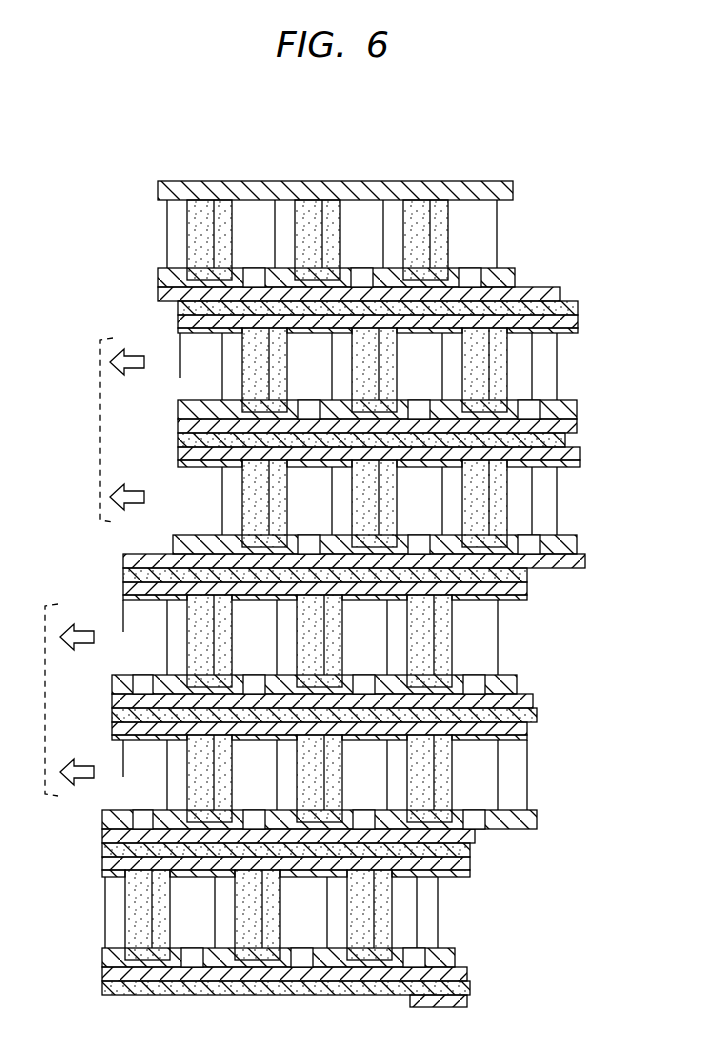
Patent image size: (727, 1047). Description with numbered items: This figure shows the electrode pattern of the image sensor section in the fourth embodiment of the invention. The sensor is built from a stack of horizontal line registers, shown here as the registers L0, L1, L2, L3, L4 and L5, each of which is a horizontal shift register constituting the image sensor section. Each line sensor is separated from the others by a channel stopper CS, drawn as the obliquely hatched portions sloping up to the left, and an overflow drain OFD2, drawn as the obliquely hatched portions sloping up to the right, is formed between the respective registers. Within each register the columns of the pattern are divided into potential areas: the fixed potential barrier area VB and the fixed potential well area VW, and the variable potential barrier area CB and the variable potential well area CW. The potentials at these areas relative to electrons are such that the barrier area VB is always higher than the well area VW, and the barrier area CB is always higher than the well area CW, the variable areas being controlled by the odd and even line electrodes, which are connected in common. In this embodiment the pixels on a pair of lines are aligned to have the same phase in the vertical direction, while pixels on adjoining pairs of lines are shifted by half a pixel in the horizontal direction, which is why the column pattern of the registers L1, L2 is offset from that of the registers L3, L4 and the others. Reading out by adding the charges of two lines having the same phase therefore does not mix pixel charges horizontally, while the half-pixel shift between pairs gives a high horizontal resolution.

The channel stopper CS is at (525, 268).
The overflow drain OFD2 is at (567, 300).
The horizontal shift register L0 is at (558, 195).
The horizontal shift register L1 is at (382, 437).
The horizontal shift register L2 is at (538, 493).
The horizontal shift register L3 is at (561, 580).
The horizontal shift register L4 is at (518, 770).
The horizontal shift register L5 is at (418, 908).
The variable potential well area CW is at (362, 357).
The variable potential barrier area CB is at (390, 382).
The fixed potential well area VW is at (456, 370).
The fixed potential barrier area VB is at (468, 465).